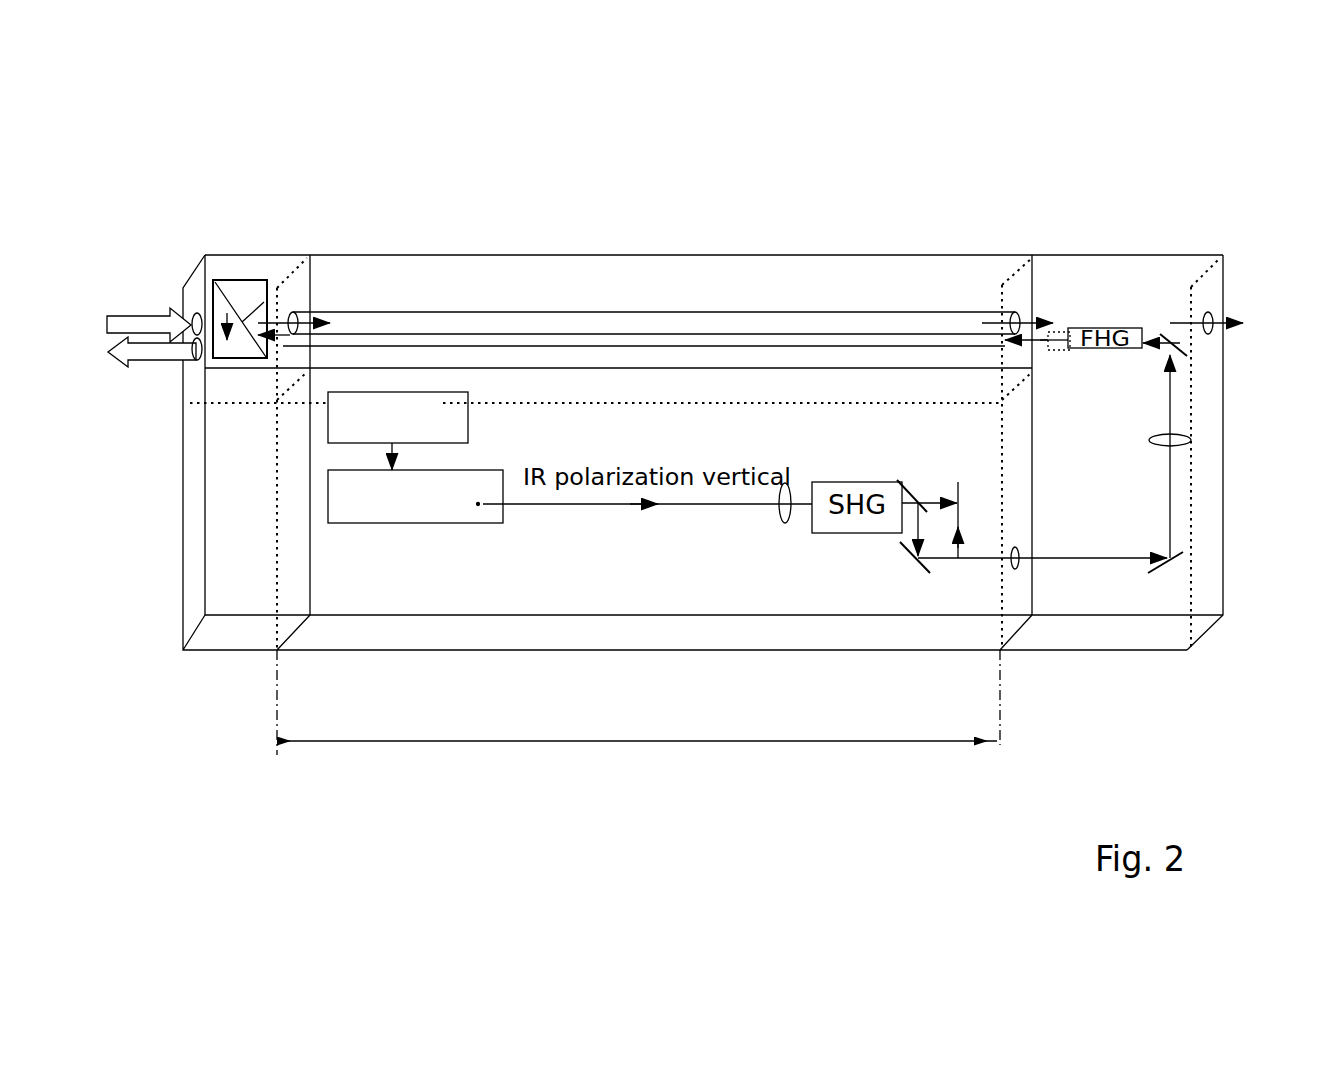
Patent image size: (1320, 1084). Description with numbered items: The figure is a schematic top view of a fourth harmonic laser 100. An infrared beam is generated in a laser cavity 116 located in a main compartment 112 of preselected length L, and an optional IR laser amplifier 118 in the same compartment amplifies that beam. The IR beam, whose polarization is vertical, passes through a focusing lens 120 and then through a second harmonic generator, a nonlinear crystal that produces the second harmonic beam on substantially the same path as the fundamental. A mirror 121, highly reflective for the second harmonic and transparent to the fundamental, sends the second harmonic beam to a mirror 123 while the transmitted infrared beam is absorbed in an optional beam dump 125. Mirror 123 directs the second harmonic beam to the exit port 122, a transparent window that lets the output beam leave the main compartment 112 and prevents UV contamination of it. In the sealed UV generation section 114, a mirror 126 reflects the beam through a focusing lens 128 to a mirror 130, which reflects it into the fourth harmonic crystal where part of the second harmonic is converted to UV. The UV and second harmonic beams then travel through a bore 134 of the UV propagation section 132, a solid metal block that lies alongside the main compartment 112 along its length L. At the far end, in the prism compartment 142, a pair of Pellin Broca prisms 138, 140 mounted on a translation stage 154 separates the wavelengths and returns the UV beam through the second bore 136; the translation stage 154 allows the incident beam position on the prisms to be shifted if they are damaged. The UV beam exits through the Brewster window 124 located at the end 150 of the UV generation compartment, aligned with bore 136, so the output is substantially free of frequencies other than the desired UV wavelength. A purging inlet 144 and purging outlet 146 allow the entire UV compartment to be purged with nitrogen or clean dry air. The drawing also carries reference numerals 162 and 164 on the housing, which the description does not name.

The laser system 100 is at (680, 853).
The main compartment 112 is at (563, 592).
The UV generation section 114 is at (1148, 280).
The laser cavity 116 is at (449, 415).
The IR laser amplifier 118 is at (403, 524).
The focusing lens 120 is at (783, 524).
The mirror 121 is at (899, 481).
The exit port 122 is at (1026, 572).
The mirror 123 is at (917, 575).
The Brewster window 124 is at (1212, 308).
The beam dump 125 is at (958, 535).
The mirror 126 is at (1186, 556).
The focusing lens 128 is at (1188, 446).
The mirror 130 is at (1189, 350).
The UV propagation section 132 is at (824, 290).
The bore 134 is at (646, 338).
The bore 136 is at (604, 318).
The Pellin Broca prism 138 is at (263, 358).
The Pellin Broca prism 140 is at (243, 312).
The prism compartment 142 is at (292, 289).
The purging inlet 144 is at (140, 302).
The purging outlet 146 is at (127, 372).
The end 150 is at (1204, 402).
The translation stage 154 is at (257, 276).
The internal wall 162 is at (1026, 492).
The partition 164 is at (297, 550).